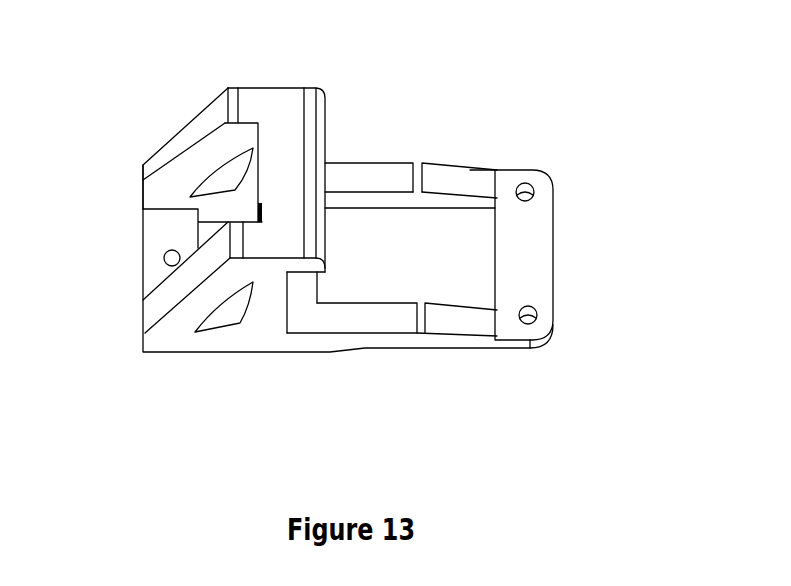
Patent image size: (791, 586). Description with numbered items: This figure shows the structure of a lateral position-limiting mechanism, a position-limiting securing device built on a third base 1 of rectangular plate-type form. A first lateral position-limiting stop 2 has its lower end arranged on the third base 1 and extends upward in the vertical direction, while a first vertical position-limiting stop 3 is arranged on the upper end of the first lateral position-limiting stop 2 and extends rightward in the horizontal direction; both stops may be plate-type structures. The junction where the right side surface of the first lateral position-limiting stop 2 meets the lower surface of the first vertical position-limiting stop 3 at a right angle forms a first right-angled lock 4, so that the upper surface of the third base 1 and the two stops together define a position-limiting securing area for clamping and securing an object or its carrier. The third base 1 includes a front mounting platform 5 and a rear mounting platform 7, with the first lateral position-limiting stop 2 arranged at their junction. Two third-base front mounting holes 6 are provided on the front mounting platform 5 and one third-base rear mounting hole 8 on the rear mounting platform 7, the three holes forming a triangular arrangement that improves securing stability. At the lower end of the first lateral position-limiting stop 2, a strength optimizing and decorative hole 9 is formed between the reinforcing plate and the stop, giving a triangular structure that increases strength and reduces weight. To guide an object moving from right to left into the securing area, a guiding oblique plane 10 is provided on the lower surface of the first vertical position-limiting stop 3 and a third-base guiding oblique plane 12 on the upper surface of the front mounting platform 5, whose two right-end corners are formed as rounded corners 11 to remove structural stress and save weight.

The third base 1 is at (363, 178).
The first lateral position-limiting stop 2 is at (265, 310).
The first vertical position-limiting stop 3 is at (288, 150).
The first right-angled lock 4 is at (290, 277).
The front mounting platform 5 is at (535, 250).
The third-base front mounting hole 6 is at (540, 320).
The rear mounting platform 7 is at (182, 230).
The third-base rear mounting hole 8 is at (170, 259).
The strength optimizing and decorative hole 9 is at (223, 313).
The guiding oblique plane 10 is at (320, 272).
The rounded corners 11 is at (545, 343).
The third-base guiding oblique plane 12 is at (455, 318).